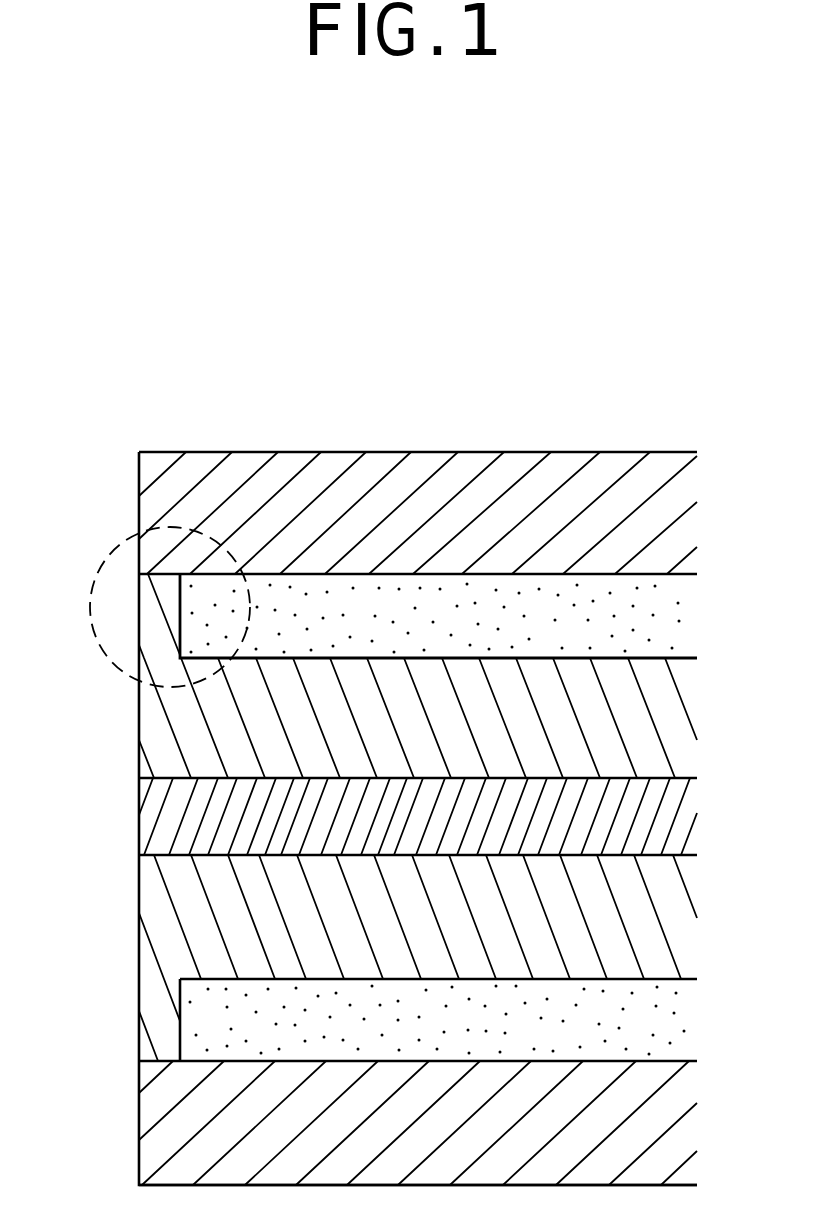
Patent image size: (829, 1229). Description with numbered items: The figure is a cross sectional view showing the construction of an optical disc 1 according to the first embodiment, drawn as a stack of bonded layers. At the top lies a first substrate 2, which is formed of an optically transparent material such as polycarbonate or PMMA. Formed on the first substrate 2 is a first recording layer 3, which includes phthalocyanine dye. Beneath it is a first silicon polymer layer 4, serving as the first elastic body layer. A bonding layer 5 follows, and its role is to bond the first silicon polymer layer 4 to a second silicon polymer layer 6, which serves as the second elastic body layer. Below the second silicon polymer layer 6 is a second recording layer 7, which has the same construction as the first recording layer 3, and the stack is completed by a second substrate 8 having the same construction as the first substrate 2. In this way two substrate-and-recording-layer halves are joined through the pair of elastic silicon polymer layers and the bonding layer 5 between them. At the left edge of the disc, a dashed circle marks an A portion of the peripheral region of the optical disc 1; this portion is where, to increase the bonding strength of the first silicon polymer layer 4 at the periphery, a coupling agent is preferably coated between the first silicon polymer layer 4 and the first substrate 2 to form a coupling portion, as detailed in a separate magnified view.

The optical disc 1 is at (441, 453).
The first substrate 2 is at (700, 455).
The first recording layer 3 is at (700, 578).
The first silicon polymer layer 4 is at (700, 661).
The bonding layer 5 is at (700, 781).
The second silicon polymer layer 6 is at (700, 858).
The second recording layer 7 is at (700, 982).
The second substrate 8 is at (700, 1064).
The A portion A is at (107, 652).